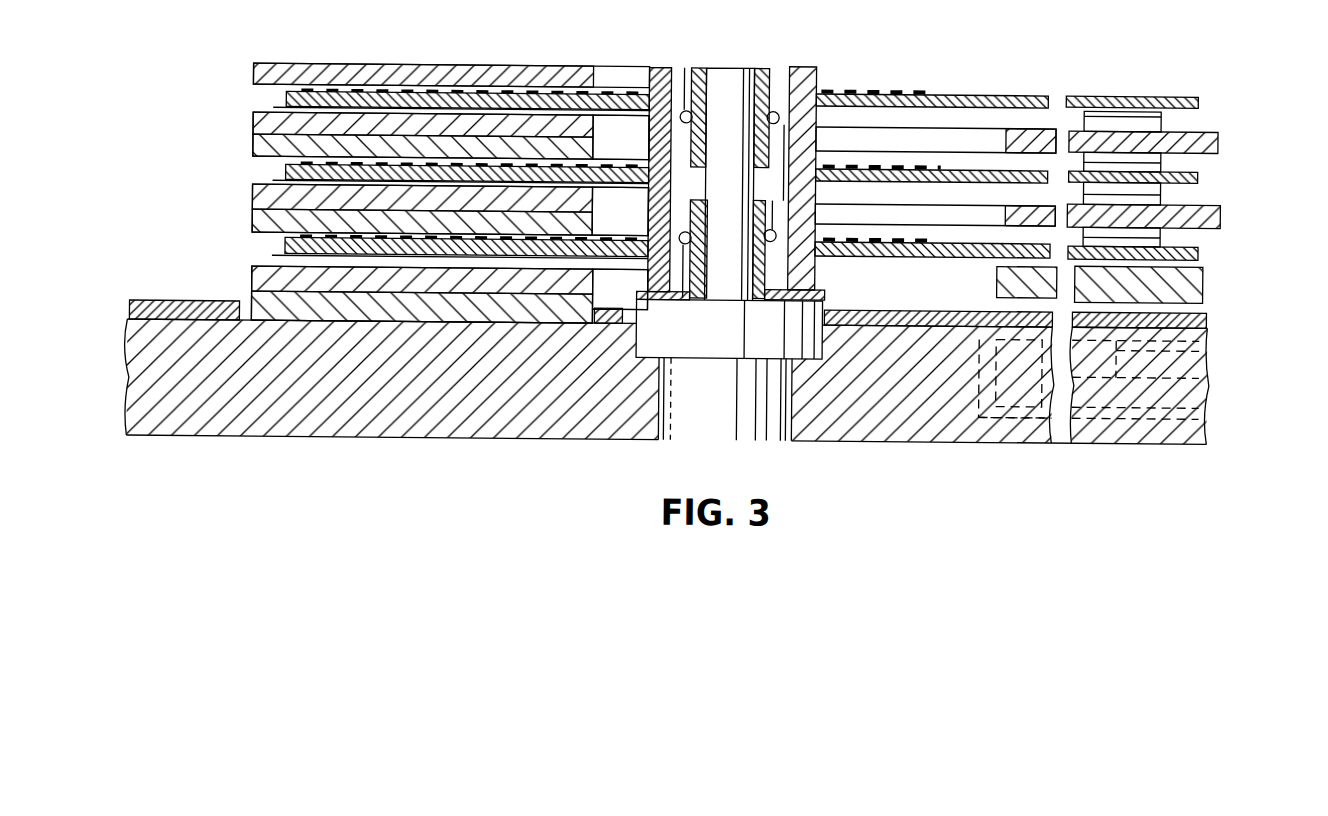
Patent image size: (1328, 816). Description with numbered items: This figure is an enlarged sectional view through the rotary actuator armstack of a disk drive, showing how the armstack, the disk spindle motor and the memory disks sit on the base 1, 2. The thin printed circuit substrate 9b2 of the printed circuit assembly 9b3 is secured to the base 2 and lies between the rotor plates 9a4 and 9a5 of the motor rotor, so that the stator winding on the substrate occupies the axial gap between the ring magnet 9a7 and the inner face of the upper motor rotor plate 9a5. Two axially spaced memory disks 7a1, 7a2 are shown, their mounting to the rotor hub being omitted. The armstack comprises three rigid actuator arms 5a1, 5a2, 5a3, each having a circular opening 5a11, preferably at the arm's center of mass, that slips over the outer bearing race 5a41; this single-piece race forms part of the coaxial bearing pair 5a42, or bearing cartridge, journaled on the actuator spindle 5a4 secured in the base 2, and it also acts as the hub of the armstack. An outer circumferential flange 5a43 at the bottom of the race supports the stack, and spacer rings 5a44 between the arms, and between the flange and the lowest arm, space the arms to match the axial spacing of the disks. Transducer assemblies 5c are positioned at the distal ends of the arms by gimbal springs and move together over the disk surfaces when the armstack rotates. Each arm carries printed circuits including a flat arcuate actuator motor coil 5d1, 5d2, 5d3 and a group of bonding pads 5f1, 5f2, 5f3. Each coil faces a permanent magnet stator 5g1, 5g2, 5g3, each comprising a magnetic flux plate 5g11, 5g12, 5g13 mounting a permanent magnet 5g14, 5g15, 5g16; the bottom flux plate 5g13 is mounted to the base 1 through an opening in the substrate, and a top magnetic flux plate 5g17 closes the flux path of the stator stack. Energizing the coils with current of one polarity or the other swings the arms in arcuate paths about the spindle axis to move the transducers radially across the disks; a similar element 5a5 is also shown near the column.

The base 1 is at (519, 441).
The base 2 is at (421, 427).
The rigid actuator arm 5a1 is at (285, 104).
The rigid actuator arm 5a2 is at (285, 176).
The rigid actuator arm 5a3 is at (285, 249).
The actuator spindle 5a4 is at (728, 67).
The spacer column 5a5 is at (652, 67).
The circular opening 5a11 is at (818, 90).
The outer bearing race 5a41 is at (700, 50).
The coaxial bearing pair 5a42 is at (797, 66).
The outer circumferential flange 5a43 is at (658, 312).
The spacer rings 5a44 is at (820, 289).
The transducer assemblies 5c is at (1122, 158).
The actuator motor coil 5d1 is at (272, 111).
The actuator motor coil 5d2 is at (272, 184).
The actuator motor coil 5d3 is at (272, 259).
The bonding pads 5f1 is at (920, 88).
The bonding pads 5f2 is at (900, 161).
The bonding pads 5f3 is at (925, 240).
The permanent magnet stator 5g1 is at (246, 139).
The permanent magnet stator 5g2 is at (252, 214).
The permanent magnet stator 5g3 is at (252, 292).
The magnetic flux plate 5g11 is at (252, 152).
The magnetic flux plate 5g12 is at (252, 222).
The magnetic flux plate 5g13 is at (247, 302).
The permanent magnet 5g14 is at (582, 128).
The permanent magnet 5g15 is at (570, 204).
The permanent magnet 5g16 is at (582, 284).
The magnetic flux plate 5g17 is at (255, 72).
The memory disk 7a1 is at (1216, 139).
The memory disk 7a2 is at (1216, 213).
The rotor plate 9a4 is at (1200, 388).
The upper motor rotor plate 9a5 is at (1203, 281).
The ring magnet 9a7 is at (1203, 352).
The printed circuit substrate 9b2 is at (645, 335).
The printed circuit assembly 9b3 is at (1207, 314).